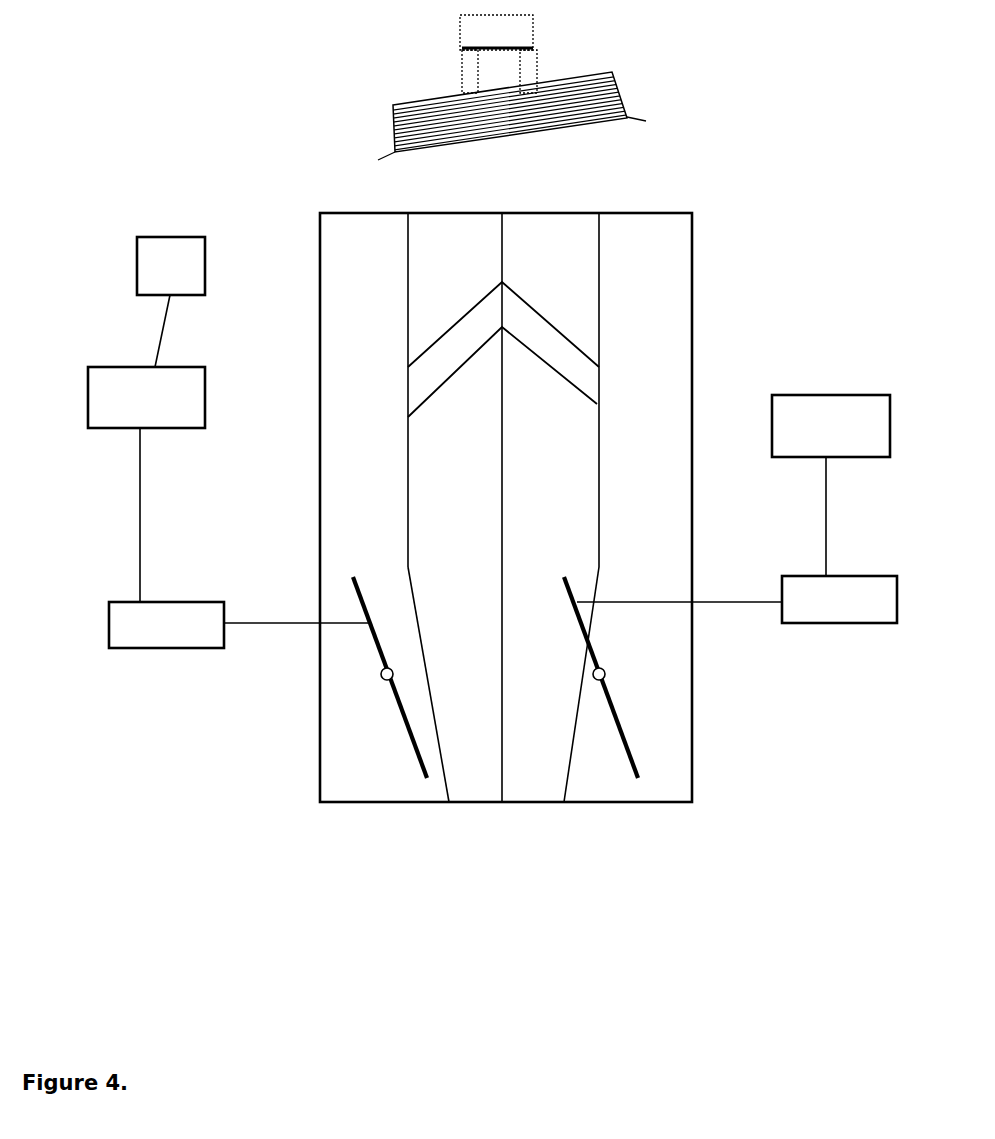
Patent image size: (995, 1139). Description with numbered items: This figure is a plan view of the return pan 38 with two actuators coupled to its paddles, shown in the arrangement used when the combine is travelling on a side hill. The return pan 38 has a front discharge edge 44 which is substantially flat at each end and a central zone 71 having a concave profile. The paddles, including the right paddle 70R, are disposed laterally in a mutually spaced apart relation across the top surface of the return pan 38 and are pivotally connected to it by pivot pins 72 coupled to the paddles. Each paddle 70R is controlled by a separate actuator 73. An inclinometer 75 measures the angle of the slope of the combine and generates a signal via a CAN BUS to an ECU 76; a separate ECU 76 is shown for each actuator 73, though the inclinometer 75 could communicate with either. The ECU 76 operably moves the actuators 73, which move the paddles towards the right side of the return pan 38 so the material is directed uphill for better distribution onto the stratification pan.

The return pan 38 is at (669, 282).
The front discharge edge 44 is at (599, 802).
The paddle 70R is at (614, 739).
The central zone 71 is at (476, 780).
The pivot pin 72 is at (380, 676).
The actuator 73 is at (181, 623).
The inclinometer 75 is at (154, 255).
The ECU 76 is at (124, 395).